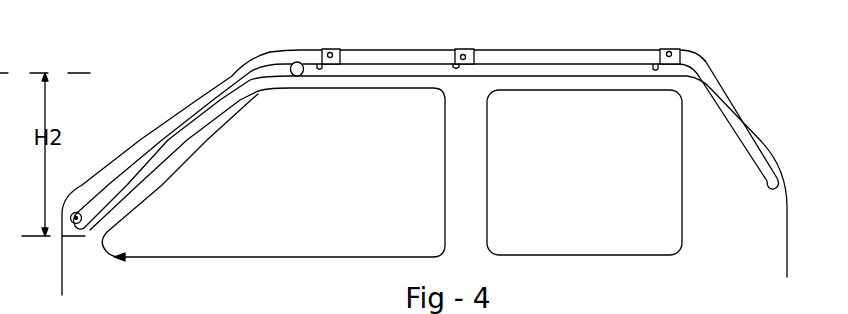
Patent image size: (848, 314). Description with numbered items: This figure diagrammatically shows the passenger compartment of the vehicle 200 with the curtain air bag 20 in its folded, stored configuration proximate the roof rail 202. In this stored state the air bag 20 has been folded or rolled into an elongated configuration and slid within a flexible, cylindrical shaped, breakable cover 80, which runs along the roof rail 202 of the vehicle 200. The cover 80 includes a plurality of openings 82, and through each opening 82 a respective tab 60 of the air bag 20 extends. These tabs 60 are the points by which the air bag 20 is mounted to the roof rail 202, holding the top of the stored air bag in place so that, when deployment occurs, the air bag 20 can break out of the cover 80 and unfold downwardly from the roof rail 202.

The air bag 20 is at (680, 70).
The vehicle 200 is at (425, 114).
The roof rail 202 is at (577, 50).
The breakable cover 80 is at (308, 67).
The openings 82 is at (317, 65).
The tab 60 is at (340, 58).